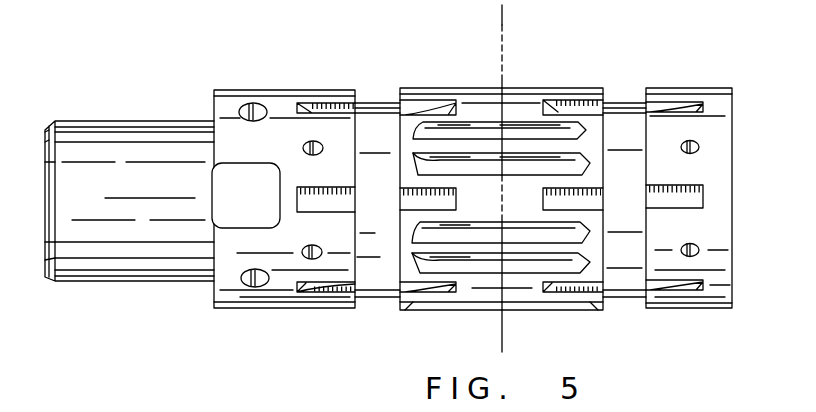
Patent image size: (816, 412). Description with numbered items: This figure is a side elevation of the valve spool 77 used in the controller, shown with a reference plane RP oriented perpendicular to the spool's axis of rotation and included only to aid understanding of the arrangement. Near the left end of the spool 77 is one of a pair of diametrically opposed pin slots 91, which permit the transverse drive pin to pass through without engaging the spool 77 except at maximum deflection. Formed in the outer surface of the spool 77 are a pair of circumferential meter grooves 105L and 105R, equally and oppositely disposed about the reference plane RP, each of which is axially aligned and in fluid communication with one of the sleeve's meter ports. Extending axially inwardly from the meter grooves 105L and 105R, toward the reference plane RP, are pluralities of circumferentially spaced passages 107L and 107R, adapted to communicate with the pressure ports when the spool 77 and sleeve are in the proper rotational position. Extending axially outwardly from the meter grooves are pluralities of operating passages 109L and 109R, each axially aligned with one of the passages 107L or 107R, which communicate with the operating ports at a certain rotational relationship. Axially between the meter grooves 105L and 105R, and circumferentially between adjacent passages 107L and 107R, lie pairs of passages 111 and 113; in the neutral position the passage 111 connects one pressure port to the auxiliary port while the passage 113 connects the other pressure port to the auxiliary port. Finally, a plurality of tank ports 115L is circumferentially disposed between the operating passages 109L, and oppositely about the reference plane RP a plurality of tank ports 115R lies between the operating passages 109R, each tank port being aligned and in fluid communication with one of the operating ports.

The valve spool 77 is at (214, 91).
The pin slot 91 is at (246, 195).
The circumferential meter groove 105L is at (380, 103).
The circumferential meter groove 105R is at (627, 101).
The passage 107L is at (427, 104).
The passage 107R is at (592, 104).
The operating passage 109L is at (337, 104).
The operating passage 109R is at (664, 107).
The passage 111 is at (576, 131).
The passage 113 is at (578, 163).
The tank port 115L is at (303, 148).
The tank port 115R is at (700, 147).
The reference plane RP is at (503, 40).